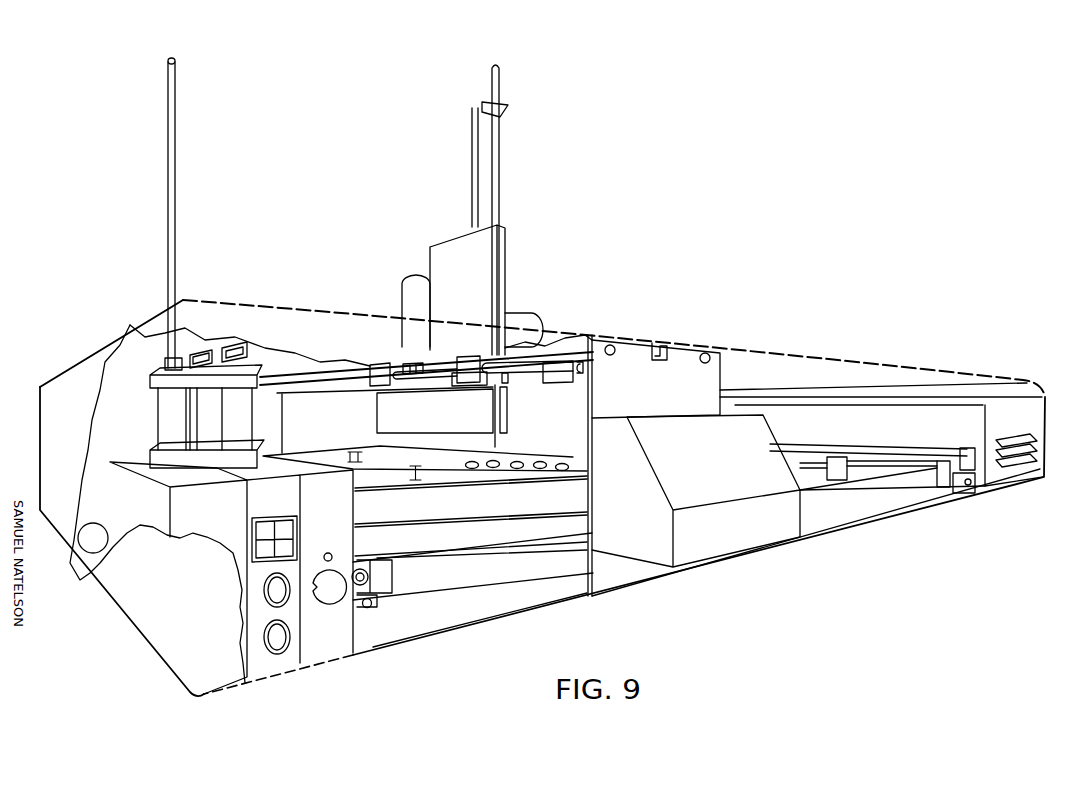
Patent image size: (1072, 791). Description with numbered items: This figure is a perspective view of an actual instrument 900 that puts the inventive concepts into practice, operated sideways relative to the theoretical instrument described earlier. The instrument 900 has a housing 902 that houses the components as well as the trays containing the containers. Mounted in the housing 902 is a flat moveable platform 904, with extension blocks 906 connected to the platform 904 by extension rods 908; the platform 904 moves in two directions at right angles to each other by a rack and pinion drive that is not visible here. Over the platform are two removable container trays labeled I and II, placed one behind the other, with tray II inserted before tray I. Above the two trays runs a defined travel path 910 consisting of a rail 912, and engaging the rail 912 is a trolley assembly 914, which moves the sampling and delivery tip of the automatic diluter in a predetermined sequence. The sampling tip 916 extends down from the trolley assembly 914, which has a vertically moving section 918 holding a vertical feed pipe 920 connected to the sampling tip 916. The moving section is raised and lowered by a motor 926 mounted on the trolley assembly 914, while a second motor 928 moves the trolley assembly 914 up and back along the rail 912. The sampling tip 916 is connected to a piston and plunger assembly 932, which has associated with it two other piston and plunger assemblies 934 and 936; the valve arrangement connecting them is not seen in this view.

The instrument 900 is at (781, 218).
The housing 902 is at (303, 320).
The flat moveable platform 904 is at (513, 533).
The extension blocks 906 is at (943, 488).
The extension rods 908 is at (810, 463).
The defined travel path 910 is at (338, 432).
The rail 912 is at (568, 355).
The trolley assembly 914 is at (380, 370).
The sampling tip 916 is at (498, 440).
The vertically moving section 918 is at (474, 302).
The vertical feed pipe 920 is at (500, 163).
The motor 926 is at (530, 313).
The second motor 928 is at (400, 275).
The piston and plunger assembly 932 is at (163, 398).
The piston and plunger assembly 934 is at (203, 417).
The piston and plunger assembly 936 is at (237, 437).